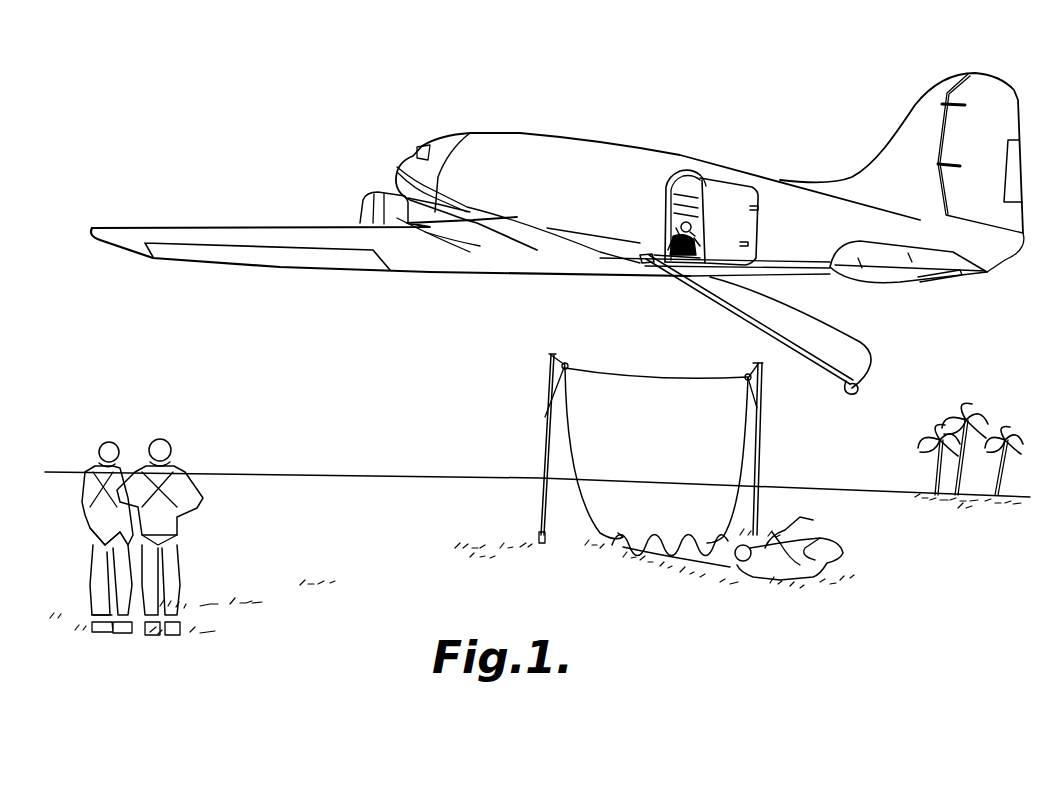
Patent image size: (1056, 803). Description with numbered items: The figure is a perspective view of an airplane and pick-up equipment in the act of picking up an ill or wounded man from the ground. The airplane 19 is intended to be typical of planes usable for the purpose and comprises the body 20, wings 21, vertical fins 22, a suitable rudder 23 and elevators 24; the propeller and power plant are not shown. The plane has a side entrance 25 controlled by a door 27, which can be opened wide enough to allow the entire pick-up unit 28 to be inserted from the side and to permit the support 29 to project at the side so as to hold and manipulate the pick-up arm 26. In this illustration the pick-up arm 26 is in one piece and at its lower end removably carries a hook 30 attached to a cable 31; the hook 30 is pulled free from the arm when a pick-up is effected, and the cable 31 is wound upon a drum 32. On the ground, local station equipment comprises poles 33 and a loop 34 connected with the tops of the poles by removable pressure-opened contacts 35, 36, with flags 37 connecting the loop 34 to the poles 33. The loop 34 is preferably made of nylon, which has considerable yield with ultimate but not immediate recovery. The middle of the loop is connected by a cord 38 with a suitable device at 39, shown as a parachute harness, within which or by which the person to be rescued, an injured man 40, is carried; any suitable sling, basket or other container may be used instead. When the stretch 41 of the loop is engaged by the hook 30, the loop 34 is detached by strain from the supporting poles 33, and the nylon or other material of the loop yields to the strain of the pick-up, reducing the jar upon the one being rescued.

The airplane 19 is at (535, 134).
The body 20 is at (557, 194).
The wings 21 is at (275, 227).
The vertical fins 22 is at (925, 156).
The rudder 23 is at (1007, 186).
The elevators 24 is at (897, 283).
The side entrance 25 is at (708, 180).
The pick-up arm 26 is at (736, 312).
The door 27 is at (735, 227).
The pick-up unit 28 is at (698, 227).
The support 29 is at (650, 255).
The hook 30 is at (858, 386).
The cable 31 is at (864, 338).
The drum 32 is at (675, 220).
The poles 33 is at (546, 447).
The loop 34 is at (656, 467).
The pressure-opened contact 35 is at (568, 364).
The pressure-opened contact 36 is at (746, 375).
The flags 37 is at (555, 352).
The cord 38 is at (700, 535).
The carrying device 39 is at (766, 561).
The injured man 40 is at (783, 532).
The stretch 41 is at (650, 375).